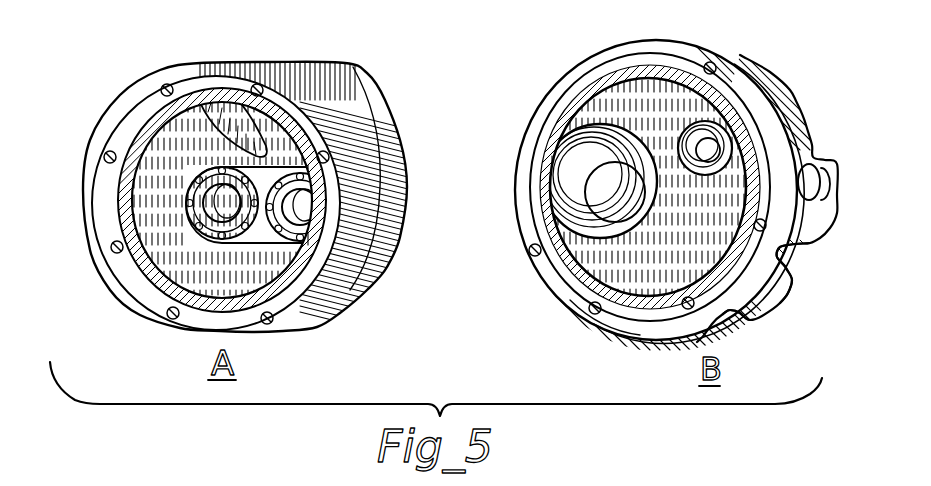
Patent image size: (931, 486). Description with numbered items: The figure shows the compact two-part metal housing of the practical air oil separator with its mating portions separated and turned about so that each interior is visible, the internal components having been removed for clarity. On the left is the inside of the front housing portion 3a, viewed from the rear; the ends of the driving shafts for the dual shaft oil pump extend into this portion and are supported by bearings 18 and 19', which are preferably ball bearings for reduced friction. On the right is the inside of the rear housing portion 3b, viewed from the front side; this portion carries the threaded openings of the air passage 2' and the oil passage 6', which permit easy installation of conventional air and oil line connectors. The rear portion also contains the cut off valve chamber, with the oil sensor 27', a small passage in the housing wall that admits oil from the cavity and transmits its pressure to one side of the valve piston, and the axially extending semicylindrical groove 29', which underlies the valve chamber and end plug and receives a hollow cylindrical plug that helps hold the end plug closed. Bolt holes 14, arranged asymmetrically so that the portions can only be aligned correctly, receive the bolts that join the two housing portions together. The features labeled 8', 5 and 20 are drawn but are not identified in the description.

In FIG. 5A, the housing portion 3a is at (122, 296).
In FIG. 5A, the curved lug / arm 8' is at (231, 90).
In FIG. 5A, the bearing 19' is at (252, 190).
In FIG. 5A, the bearing 18 is at (298, 203).
In FIG. 5B, the housing portion 3b is at (793, 110).
In FIG. 5B, the air passage 2' is at (650, 178).
In FIG. 5B, the oil passage 6' is at (600, 181).
In FIG. 5B, the small threaded hole 5 is at (714, 267).
In FIG. 5B, the mounting hole in lobe 20 is at (830, 167).
In FIG. 5B, the oil sensor 27' is at (807, 276).
In FIG. 5B, the semicylindrical groove 29' is at (759, 341).
In FIG. 5B, the bolt holes 14 is at (600, 316).